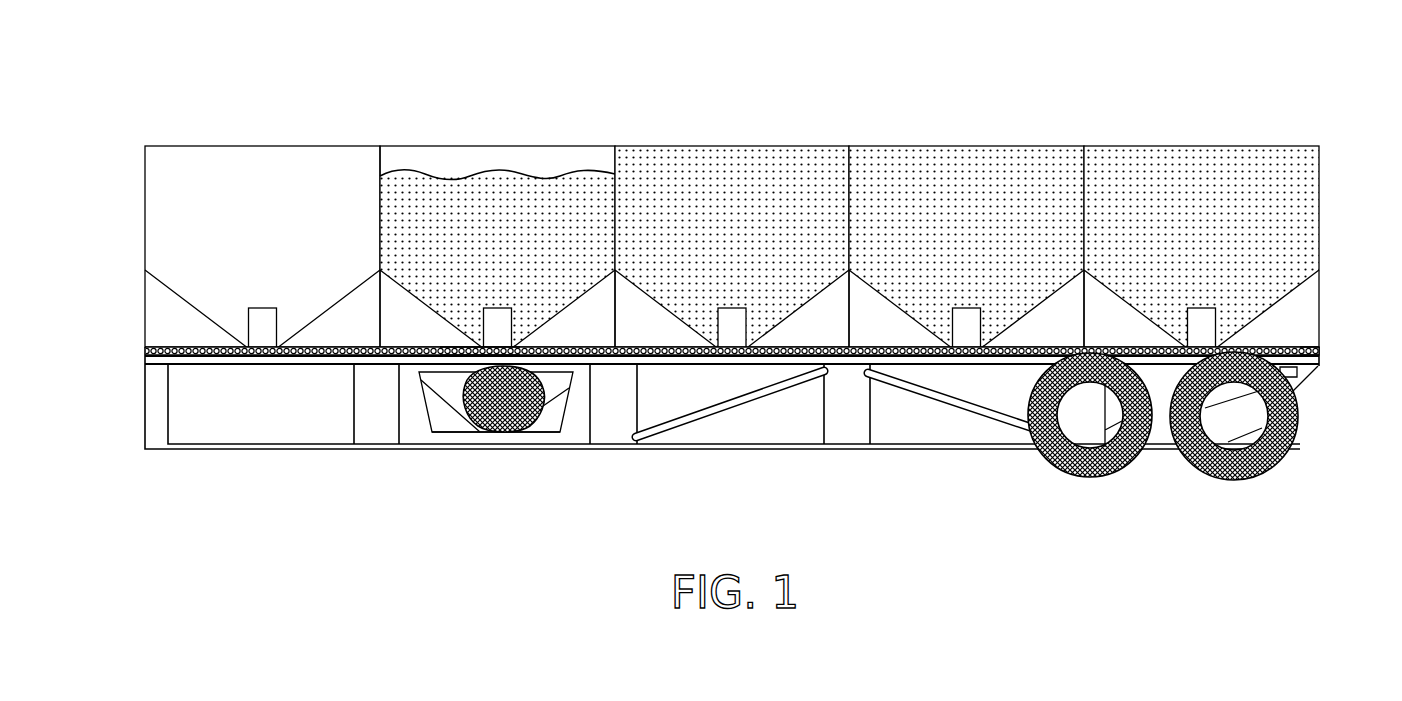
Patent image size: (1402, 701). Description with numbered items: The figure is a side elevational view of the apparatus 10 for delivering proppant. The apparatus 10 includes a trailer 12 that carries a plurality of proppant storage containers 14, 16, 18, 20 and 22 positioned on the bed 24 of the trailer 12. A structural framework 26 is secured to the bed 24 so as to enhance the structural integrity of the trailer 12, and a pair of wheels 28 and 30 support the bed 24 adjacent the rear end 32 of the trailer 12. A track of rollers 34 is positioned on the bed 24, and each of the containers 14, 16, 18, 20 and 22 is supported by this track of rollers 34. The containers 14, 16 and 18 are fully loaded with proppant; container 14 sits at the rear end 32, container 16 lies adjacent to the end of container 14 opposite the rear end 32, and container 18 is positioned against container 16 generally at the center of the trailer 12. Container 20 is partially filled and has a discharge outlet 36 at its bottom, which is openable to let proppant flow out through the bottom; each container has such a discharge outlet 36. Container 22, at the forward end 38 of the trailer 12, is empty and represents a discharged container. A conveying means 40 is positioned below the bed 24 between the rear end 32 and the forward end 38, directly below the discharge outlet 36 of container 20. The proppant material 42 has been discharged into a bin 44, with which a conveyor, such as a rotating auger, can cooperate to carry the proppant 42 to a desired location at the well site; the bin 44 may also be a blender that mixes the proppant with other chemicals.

The apparatus 10 is at (1131, 78).
The trailer 12 is at (151, 410).
The proppant storage container 14 is at (1185, 165).
The proppant storage container 16 is at (965, 165).
The proppant storage container 18 is at (739, 165).
The proppant storage container 20 is at (512, 165).
The proppant storage container 22 is at (312, 165).
The bed 24 is at (1322, 348).
The structural framework 26 is at (748, 400).
The wheel 28 is at (1117, 477).
The wheel 30 is at (1248, 478).
The rear end 32 is at (1317, 370).
The track of rollers 34 is at (145, 350).
The discharge outlet 36 is at (478, 342).
The forward end 38 is at (145, 375).
The conveying means 40 is at (540, 435).
The proppant material 42 is at (490, 432).
The bin 44 is at (567, 415).